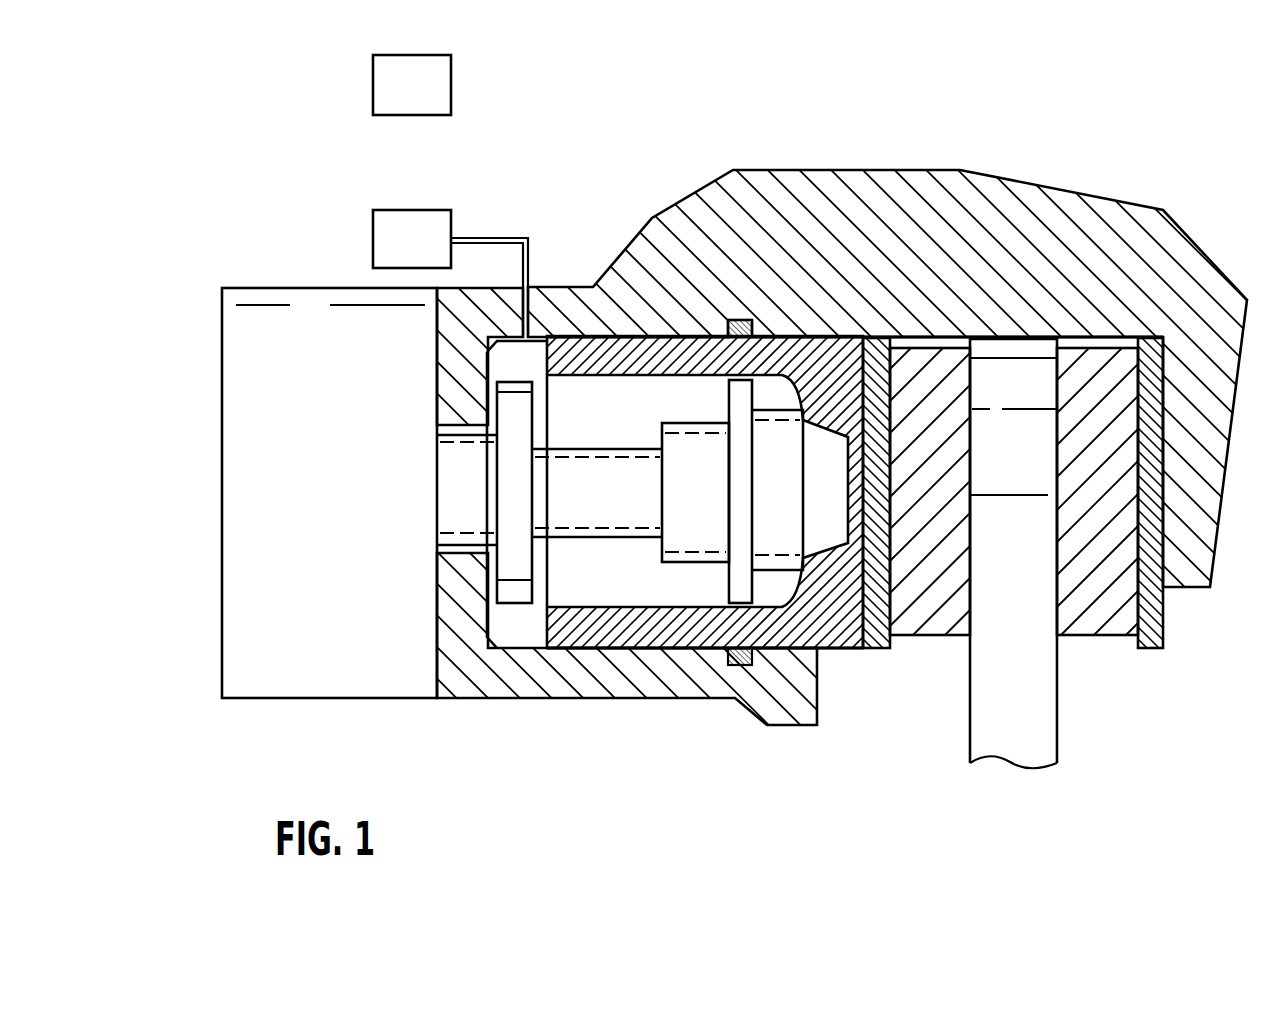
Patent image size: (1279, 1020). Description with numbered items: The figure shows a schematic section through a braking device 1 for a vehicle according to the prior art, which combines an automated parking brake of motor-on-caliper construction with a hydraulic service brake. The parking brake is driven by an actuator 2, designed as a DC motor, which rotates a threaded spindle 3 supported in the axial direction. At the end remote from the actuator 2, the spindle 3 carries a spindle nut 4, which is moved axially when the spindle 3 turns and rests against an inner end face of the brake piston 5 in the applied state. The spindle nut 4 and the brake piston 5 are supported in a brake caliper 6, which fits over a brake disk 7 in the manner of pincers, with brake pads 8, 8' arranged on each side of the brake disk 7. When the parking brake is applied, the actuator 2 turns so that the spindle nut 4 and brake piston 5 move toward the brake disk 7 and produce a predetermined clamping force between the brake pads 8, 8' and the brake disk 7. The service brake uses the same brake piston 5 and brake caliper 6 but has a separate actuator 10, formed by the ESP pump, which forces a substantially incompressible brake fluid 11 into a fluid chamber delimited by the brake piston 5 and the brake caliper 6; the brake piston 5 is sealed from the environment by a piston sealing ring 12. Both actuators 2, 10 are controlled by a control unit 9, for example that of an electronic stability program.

The braking device 1 is at (1155, 145).
The actuator 2 is at (238, 272).
The spindle 3 is at (590, 517).
The spindle nut 4 is at (690, 517).
The brake piston 5 is at (634, 632).
The brake caliper 6 is at (903, 205).
The brake disk 7 is at (1010, 738).
The brake pad 8 is at (916, 534).
The brake pad 8' is at (1110, 534).
The control unit 9 is at (393, 83).
The actuator 10 is at (393, 238).
The brake fluid 11 is at (518, 637).
The piston sealing ring 12 is at (742, 667).